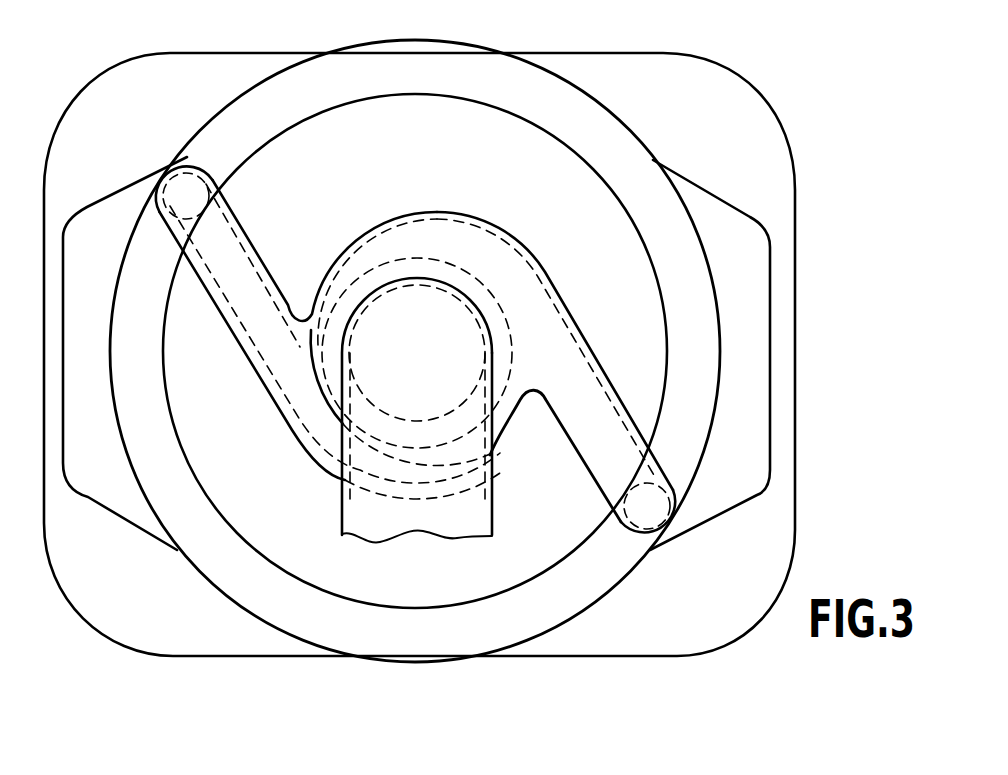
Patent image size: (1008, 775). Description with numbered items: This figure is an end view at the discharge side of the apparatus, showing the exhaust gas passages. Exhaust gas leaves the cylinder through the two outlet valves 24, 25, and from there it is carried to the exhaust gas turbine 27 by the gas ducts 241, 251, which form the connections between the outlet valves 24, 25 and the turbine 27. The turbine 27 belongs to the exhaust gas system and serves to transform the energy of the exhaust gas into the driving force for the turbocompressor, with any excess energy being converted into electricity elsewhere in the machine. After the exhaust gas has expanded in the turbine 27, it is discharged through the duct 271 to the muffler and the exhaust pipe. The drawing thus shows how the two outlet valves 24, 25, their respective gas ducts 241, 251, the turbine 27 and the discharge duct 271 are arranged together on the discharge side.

The outlet valve 24 is at (642, 507).
The gas duct 241 is at (582, 360).
The outlet valve 25 is at (170, 170).
The gas duct 251 is at (233, 265).
The exhaust gas turbine 27 is at (377, 427).
The duct 271 is at (483, 493).